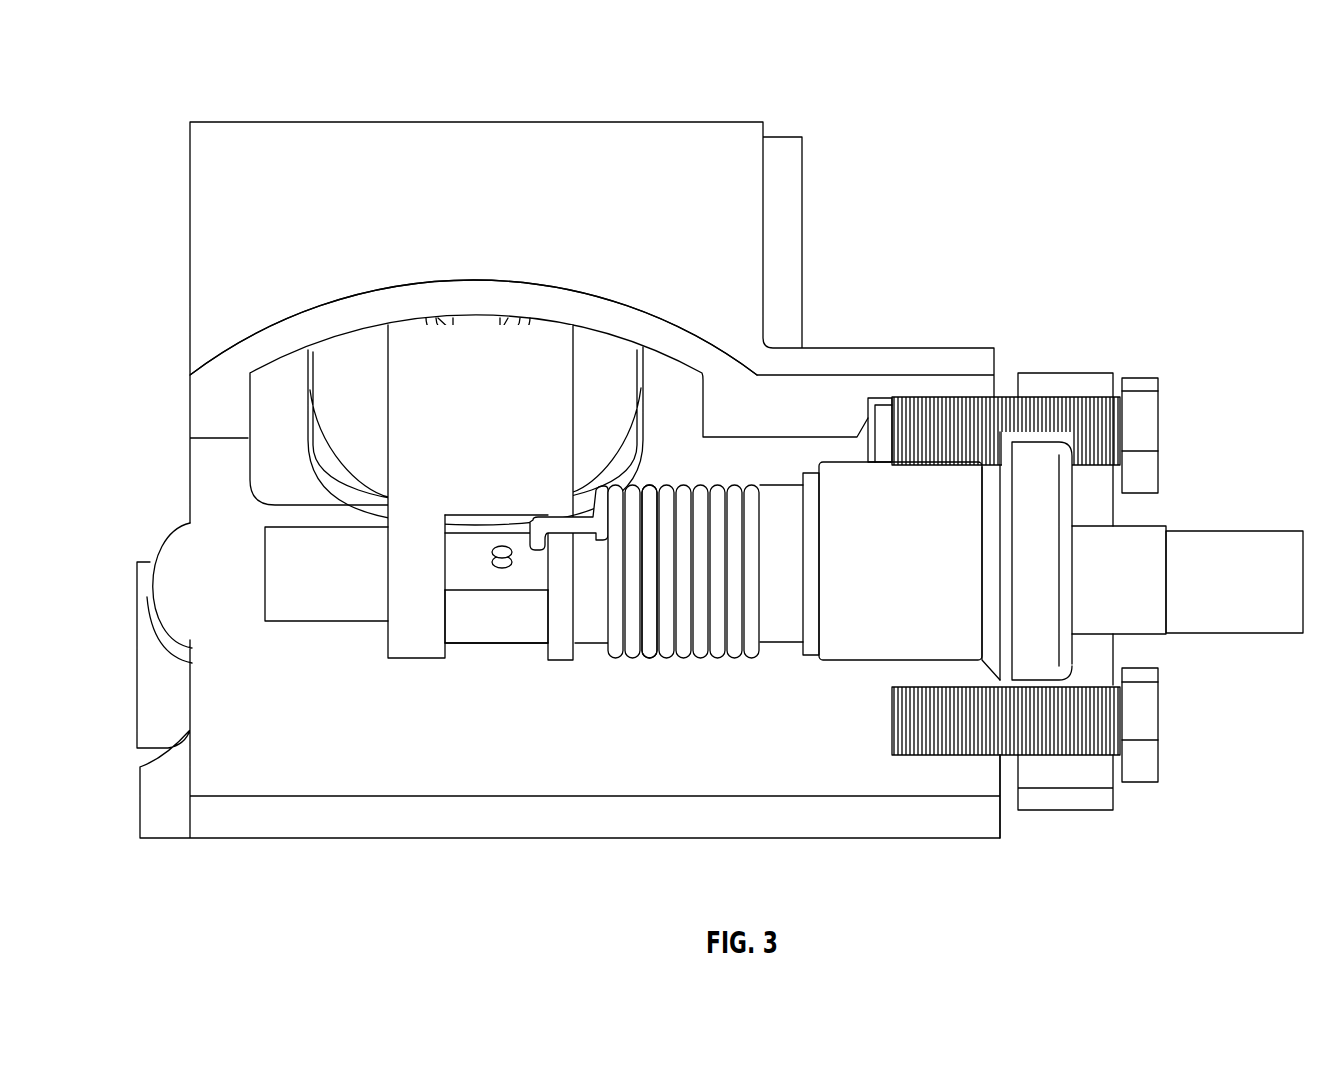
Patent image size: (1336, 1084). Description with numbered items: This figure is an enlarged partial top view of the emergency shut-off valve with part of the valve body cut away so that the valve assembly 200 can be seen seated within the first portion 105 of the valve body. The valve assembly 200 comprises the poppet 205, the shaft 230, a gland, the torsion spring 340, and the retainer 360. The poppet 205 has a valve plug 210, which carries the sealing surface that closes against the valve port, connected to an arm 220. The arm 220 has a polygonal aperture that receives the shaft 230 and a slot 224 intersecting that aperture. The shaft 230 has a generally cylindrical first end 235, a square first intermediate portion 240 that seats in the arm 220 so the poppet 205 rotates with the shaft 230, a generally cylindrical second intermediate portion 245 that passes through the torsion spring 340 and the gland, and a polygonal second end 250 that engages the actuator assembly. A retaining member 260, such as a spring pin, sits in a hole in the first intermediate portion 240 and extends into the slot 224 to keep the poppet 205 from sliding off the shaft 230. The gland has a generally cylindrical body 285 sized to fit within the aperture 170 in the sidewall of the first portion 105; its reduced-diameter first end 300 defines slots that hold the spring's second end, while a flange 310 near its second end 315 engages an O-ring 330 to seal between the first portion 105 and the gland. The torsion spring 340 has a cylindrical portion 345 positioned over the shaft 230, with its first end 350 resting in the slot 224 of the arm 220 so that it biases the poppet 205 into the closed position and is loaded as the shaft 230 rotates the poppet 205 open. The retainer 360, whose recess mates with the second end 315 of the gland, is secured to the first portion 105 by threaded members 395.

The first portion 105 is at (303, 143).
The aperture 170 is at (848, 680).
The valve assembly 200 is at (770, 455).
The poppet 205 is at (600, 343).
The valve plug 210 is at (352, 352).
The arm 220 is at (422, 340).
The slot 224 is at (450, 548).
The shaft 230 is at (250, 577).
The first end 235 is at (315, 621).
The first intermediate portion 240 is at (497, 630).
The second intermediate portion 245 is at (1130, 622).
The second end 250 is at (1222, 548).
The retaining member 260 is at (502, 546).
The body 285 is at (852, 490).
The first end 300 is at (793, 660).
The flange 310 is at (1000, 395).
The second end 315 is at (1055, 428).
The O-ring 330 is at (993, 553).
The torsion spring 340 is at (722, 688).
The cylindrical portion 345 is at (655, 668).
The first end 350 is at (560, 517).
The retainer 360 is at (1060, 378).
The threaded members 395 is at (1130, 385).